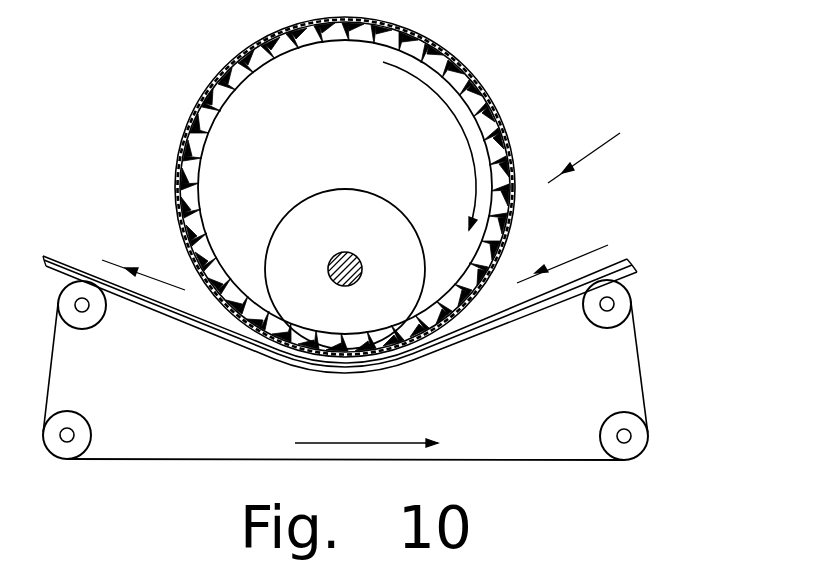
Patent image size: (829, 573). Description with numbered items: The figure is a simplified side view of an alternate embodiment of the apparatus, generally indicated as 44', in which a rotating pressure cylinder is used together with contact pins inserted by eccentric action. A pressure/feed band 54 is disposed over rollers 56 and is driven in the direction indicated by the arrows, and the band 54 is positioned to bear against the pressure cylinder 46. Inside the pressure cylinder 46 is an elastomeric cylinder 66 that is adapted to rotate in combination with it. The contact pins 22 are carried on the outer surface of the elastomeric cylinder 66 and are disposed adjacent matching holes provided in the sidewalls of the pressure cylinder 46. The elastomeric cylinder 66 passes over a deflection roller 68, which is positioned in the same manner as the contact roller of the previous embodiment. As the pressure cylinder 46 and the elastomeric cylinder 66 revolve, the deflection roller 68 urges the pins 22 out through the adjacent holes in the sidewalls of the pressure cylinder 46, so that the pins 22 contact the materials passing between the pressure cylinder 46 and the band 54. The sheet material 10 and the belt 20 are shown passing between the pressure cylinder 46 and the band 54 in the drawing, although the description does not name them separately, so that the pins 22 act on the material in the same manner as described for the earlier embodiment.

The sheet material 10 is at (622, 260).
The conveyor belt 20 is at (640, 270).
The contact pins 22 is at (208, 90).
The apparatus 44' is at (602, 143).
The pressure cylinder 46 is at (478, 88).
The pressure/feed band 54 is at (642, 375).
The rollers 56 is at (92, 328).
The elastomeric cylinder 66 is at (258, 70).
The deflection roller 68 is at (376, 217).